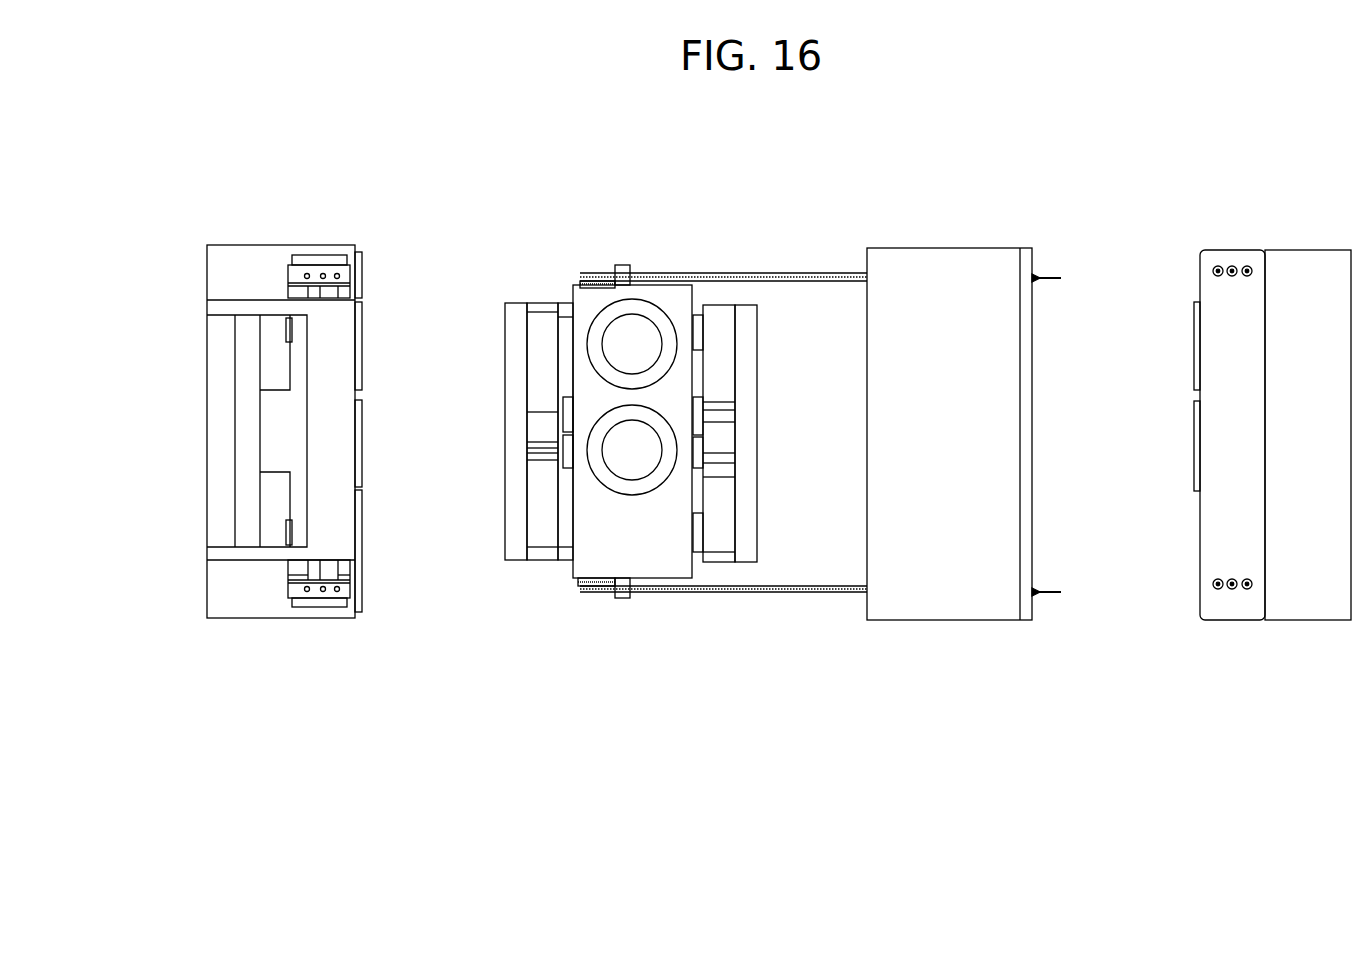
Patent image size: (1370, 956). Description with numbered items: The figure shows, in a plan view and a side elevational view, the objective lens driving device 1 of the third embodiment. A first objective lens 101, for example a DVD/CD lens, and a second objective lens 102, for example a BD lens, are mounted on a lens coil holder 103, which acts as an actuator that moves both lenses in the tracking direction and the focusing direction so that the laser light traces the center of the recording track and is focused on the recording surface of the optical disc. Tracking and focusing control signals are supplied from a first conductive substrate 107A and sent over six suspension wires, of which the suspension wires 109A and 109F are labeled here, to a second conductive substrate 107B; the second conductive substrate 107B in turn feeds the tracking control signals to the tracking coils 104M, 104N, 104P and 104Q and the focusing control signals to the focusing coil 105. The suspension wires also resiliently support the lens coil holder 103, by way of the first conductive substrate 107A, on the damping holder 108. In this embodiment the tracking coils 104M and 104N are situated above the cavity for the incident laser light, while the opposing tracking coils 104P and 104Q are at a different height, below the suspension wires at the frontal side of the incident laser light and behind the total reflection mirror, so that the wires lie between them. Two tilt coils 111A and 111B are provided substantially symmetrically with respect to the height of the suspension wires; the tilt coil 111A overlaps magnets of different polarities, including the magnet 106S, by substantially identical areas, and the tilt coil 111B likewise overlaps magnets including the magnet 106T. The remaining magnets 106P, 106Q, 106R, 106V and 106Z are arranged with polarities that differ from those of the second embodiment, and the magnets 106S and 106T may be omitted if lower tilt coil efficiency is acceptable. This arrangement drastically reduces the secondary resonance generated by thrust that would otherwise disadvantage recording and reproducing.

The objective lens driving device 1 is at (737, 163).
The first objective lens 101 is at (362, 320).
The second objective lens 102 is at (357, 485).
The lens coil holder 103 is at (278, 452).
The tracking coil 104M is at (567, 403).
The tracking coil 104N is at (557, 458).
The tracking coil 104P is at (705, 462).
The tracking coil 104Q is at (705, 402).
The focusing coil 105 is at (337, 300).
The magnet 106P is at (538, 352).
The magnet 106Q is at (540, 428).
The magnet 106R is at (538, 545).
The magnet 106S is at (720, 540).
The magnet 106T is at (722, 347).
The magnet 106V is at (722, 435).
The magnet 106Z is at (224, 388).
The first conductive substrate 107A is at (300, 262).
The second conductive substrate 107B is at (290, 582).
The damping holder 108 is at (237, 267).
The suspension wire 109A is at (813, 595).
The suspension wire 109F is at (835, 275).
The tilt coil 111A is at (285, 535).
The tilt coil 111B is at (285, 330).